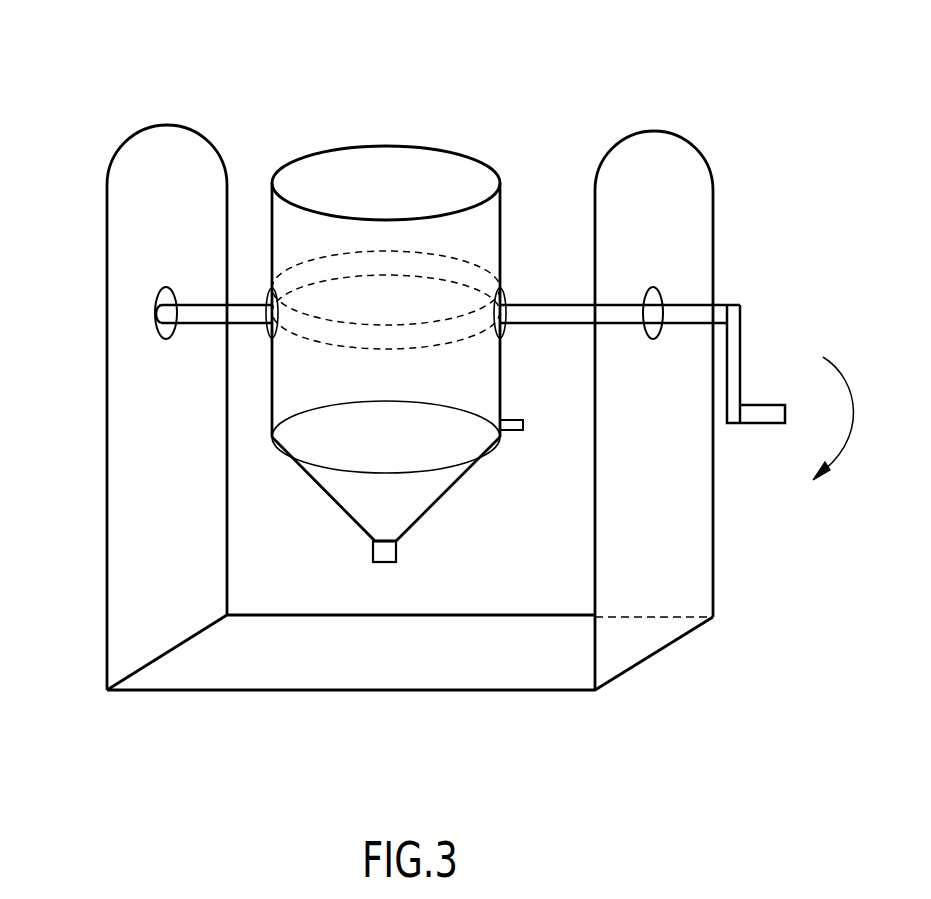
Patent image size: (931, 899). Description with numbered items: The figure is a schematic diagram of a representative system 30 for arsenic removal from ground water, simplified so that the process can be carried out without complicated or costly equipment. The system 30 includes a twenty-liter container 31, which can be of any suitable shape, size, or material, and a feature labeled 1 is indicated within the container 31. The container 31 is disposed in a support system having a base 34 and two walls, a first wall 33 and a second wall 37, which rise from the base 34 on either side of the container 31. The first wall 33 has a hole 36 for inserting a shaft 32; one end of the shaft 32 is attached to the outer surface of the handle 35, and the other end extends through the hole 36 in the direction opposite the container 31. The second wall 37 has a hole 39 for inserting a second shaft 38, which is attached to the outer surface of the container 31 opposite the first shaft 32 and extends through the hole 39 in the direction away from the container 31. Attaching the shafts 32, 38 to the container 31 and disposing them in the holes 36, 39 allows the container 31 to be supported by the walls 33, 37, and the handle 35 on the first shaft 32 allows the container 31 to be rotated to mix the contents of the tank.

The system 30 is at (493, 84).
The container 31 is at (484, 164).
The sheet material 1 is at (473, 356).
The shaft 32 is at (560, 305).
The first wall 33 is at (703, 551).
The base 34 is at (367, 687).
The handle 35 is at (742, 352).
The hole 36 is at (653, 338).
The second wall 37 is at (107, 487).
The second shaft 38 is at (243, 303).
The hole 39 is at (167, 292).